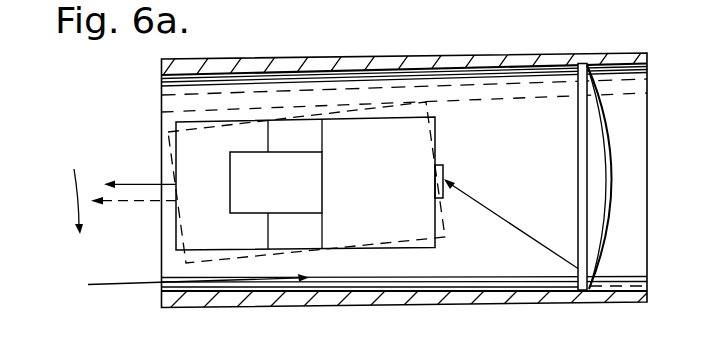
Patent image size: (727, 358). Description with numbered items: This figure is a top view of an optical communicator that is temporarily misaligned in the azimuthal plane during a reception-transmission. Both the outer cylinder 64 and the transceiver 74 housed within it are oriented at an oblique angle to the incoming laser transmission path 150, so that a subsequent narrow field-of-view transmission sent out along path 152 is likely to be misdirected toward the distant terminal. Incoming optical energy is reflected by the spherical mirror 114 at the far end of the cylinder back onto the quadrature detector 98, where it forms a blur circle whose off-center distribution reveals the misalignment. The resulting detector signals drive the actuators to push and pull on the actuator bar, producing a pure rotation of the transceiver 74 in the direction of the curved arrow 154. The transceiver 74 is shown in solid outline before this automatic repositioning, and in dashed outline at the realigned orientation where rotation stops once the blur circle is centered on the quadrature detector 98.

The outer cylinder 64 is at (528, 61).
The transceiver 74 is at (176, 122).
The quadrature detector 98 is at (445, 198).
The spherical mirror 114 is at (611, 212).
The laser transmission path 150 is at (140, 284).
The transmission path 152 is at (140, 184).
The curved arrow 154 is at (71, 190).